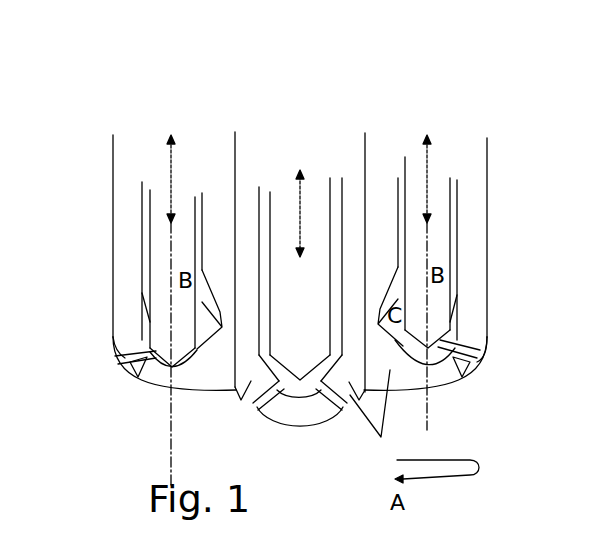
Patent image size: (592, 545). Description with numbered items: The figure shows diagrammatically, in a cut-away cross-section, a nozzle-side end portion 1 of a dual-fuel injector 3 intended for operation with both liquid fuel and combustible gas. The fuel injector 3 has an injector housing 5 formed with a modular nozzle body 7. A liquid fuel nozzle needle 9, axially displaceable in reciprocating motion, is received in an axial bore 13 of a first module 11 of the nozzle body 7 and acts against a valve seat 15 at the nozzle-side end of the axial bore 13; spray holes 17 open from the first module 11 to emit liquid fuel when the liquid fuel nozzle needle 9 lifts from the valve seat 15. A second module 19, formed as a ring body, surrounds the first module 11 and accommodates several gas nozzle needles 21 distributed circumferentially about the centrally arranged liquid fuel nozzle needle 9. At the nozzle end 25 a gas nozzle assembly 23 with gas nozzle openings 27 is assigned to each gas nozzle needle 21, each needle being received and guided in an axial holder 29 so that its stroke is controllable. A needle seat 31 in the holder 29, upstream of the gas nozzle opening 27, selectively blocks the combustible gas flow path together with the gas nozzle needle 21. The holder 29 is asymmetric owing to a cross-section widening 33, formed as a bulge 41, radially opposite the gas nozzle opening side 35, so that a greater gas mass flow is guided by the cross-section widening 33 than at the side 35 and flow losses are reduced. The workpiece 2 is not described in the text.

The nozzle-side end portion 1 is at (455, 404).
The workpiece 2 is at (589, 474).
The fuel injector 3 is at (169, 95).
The injector housing 5 is at (477, 165).
The nozzle body 7 is at (373, 417).
The liquid fuel nozzle needle 9 is at (310, 323).
The first module 11 is at (248, 385).
The axial bore 13 is at (262, 187).
The valve seat 15 is at (287, 345).
The spray holes 17 is at (342, 412).
The second module 19 is at (162, 377).
The gas nozzle needles 21 is at (155, 258).
The gas nozzle assembly 23 is at (110, 362).
The nozzle end 25 is at (410, 403).
The gas nozzle openings 27 is at (128, 363).
The axial holder 29 is at (202, 185).
The needle seat 31 is at (132, 355).
The cross-section widening 33 is at (202, 272).
The gas nozzle opening side 35 is at (143, 293).
The bulge 41 is at (197, 347).